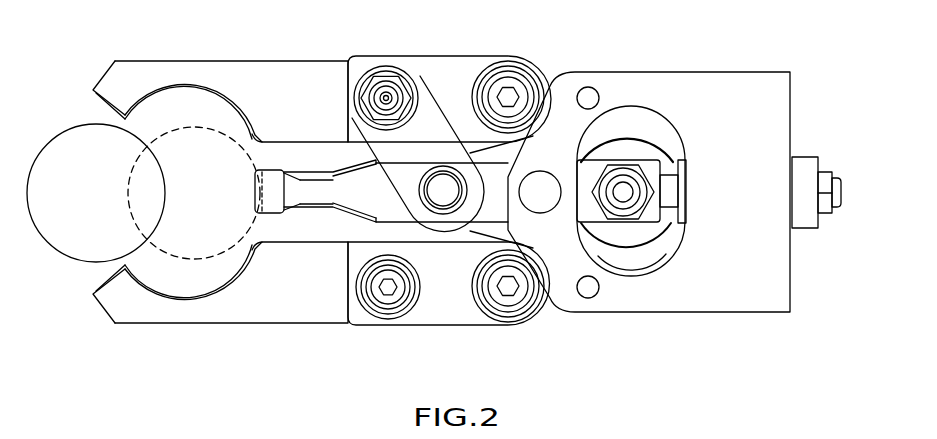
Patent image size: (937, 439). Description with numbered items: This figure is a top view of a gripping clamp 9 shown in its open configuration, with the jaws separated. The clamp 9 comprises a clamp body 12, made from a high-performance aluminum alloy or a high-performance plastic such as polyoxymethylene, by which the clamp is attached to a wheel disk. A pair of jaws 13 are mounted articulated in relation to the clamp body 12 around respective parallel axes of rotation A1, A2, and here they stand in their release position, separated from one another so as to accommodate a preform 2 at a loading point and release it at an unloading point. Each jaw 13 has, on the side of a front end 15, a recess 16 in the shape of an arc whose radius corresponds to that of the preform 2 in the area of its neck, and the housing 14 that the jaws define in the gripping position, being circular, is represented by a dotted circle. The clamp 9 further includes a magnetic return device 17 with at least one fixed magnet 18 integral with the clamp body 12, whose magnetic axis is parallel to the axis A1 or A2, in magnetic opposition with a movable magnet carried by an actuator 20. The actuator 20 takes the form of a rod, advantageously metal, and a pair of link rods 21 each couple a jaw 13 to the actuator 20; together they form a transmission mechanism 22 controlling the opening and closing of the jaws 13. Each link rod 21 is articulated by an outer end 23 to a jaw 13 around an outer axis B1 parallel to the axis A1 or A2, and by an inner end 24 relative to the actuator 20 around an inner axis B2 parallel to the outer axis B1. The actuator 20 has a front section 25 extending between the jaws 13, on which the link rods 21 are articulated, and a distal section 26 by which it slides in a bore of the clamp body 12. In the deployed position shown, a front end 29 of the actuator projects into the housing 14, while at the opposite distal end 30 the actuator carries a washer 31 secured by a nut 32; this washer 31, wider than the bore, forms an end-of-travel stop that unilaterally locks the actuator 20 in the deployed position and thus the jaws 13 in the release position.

The preform 2 is at (68, 127).
The clamp 9 is at (634, 60).
The clamp body 12 is at (703, 295).
The jaws 13 is at (257, 70).
The housing 14 is at (227, 132).
The front end 15 is at (103, 87).
The recess 16 is at (167, 90).
The magnetic return device 17 is at (542, 222).
The fixed magnet 18 is at (552, 204).
The actuator 20 is at (381, 201).
The link rods 21 is at (433, 151).
The transmission mechanism 22 is at (343, 153).
The outer end 23 is at (373, 70).
The inner end 24 is at (462, 243).
The front section 25 is at (344, 226).
The distal section 26 is at (665, 162).
The front end 29 is at (255, 190).
The distal end 30 is at (841, 188).
The washer 31 is at (802, 168).
The nut 32 is at (827, 213).
The axis of rotation A1 is at (510, 95).
The axis of rotation A2 is at (507, 290).
The outer axis B1 is at (388, 100).
The inner axis B2 is at (442, 192).